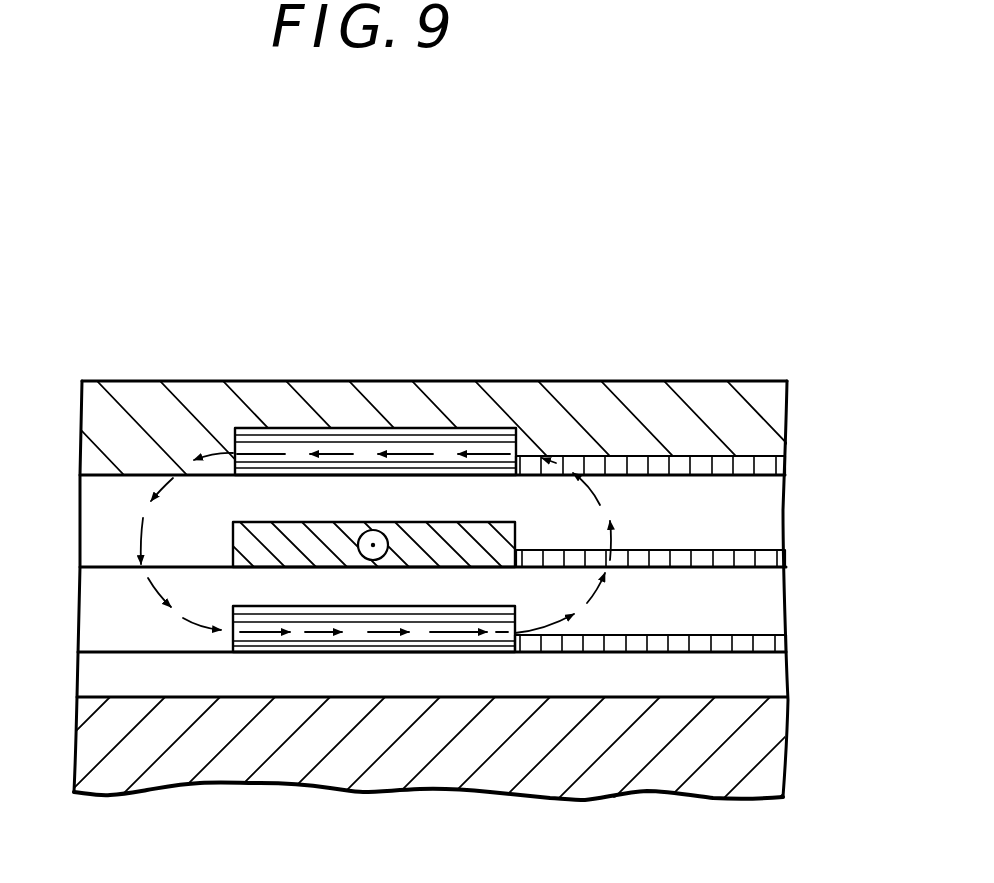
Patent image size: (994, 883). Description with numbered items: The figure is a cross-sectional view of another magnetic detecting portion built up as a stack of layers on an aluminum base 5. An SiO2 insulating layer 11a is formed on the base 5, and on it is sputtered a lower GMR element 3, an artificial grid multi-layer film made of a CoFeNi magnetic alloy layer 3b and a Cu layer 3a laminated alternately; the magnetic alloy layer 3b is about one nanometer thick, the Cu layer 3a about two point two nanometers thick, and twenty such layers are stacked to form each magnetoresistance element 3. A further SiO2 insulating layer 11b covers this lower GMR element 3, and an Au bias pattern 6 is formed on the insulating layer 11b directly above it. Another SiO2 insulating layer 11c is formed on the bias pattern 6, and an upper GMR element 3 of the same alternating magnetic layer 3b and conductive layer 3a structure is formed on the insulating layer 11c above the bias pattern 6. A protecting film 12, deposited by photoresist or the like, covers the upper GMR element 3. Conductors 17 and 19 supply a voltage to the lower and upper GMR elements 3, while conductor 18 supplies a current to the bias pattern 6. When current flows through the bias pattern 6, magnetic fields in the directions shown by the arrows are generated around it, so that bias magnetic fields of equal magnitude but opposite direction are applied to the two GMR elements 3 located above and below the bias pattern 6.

The GMR element 3 is at (266, 428).
The Cu layer 3a is at (402, 437).
The CoFeNi magnetic alloy layer 3b is at (330, 455).
The aluminum base 5 is at (684, 762).
The bias pattern 6 is at (407, 557).
The insulating layer 11a is at (767, 684).
The insulating layer 11b is at (755, 603).
The insulating layer 11c is at (750, 514).
The protecting film 12 is at (627, 405).
The conductor 17 is at (772, 645).
The conductor 18 is at (762, 557).
The conductor 19 is at (697, 465).